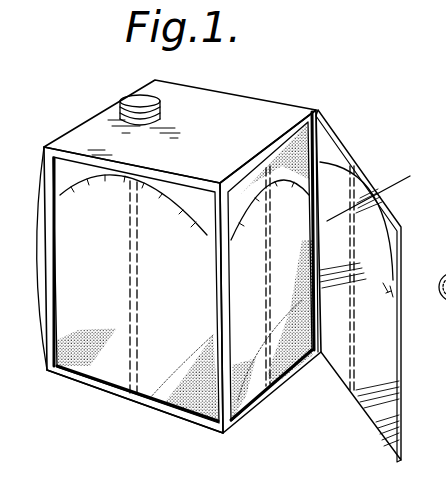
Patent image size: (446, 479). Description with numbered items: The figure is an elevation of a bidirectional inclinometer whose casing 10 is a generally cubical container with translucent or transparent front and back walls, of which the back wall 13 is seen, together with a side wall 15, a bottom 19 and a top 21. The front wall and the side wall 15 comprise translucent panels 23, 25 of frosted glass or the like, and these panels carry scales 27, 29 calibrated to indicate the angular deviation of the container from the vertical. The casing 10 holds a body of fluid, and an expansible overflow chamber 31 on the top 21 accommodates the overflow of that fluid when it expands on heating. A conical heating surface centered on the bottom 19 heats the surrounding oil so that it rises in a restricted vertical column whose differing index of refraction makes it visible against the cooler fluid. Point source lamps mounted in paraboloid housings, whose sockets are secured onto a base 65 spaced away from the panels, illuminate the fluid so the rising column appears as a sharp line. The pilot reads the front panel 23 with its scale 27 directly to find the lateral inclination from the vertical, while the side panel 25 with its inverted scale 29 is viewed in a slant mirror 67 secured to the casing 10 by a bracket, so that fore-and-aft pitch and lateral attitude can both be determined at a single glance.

The casing 10 is at (258, 108).
The back wall 13 is at (152, 383).
The side wall 15 is at (290, 357).
The bottom 19 is at (200, 427).
The top 21 is at (82, 137).
The translucent panel 23 is at (90, 367).
The translucent panel 25 is at (250, 383).
The scale 27 is at (185, 209).
The scale 29 is at (323, 125).
The expansible overflow chamber 31 is at (128, 97).
The base 65 is at (443, 268).
The slant mirror 67 is at (375, 189).